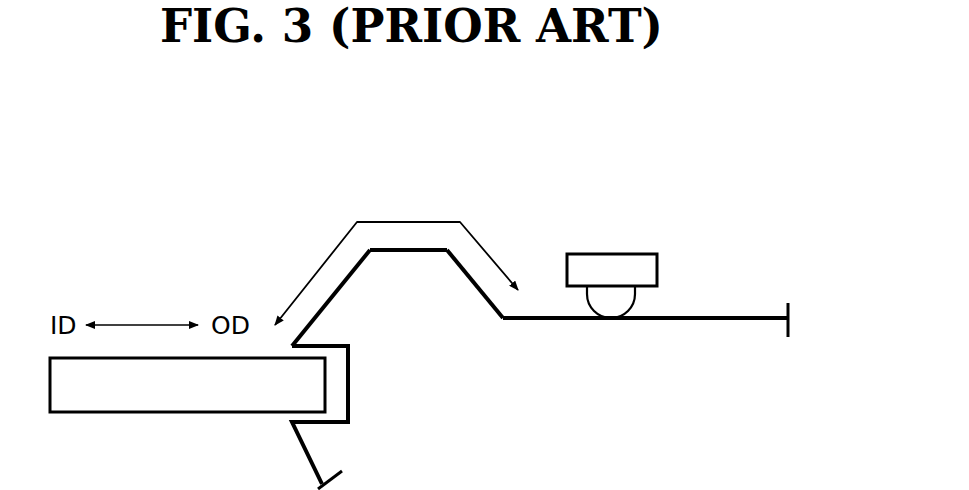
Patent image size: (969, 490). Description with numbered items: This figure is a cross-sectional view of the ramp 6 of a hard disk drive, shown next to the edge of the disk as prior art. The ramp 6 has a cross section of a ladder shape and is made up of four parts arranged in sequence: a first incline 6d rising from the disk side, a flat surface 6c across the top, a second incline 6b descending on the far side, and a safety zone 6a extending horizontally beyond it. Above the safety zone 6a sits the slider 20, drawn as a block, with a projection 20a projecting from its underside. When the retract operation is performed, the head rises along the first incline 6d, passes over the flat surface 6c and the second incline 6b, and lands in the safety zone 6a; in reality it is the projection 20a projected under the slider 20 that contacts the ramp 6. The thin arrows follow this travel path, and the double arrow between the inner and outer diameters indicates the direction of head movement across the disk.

The ramp 6 is at (540, 348).
The safety zone 6a is at (735, 320).
The second incline 6b is at (478, 297).
The flat surface 6c is at (410, 250).
The first incline 6d is at (340, 288).
The slider 20 is at (608, 260).
The projection 20a is at (610, 303).